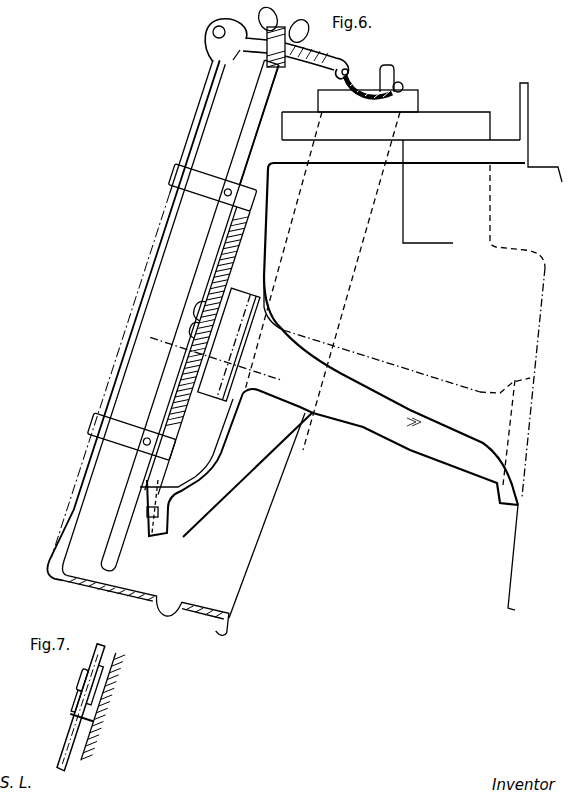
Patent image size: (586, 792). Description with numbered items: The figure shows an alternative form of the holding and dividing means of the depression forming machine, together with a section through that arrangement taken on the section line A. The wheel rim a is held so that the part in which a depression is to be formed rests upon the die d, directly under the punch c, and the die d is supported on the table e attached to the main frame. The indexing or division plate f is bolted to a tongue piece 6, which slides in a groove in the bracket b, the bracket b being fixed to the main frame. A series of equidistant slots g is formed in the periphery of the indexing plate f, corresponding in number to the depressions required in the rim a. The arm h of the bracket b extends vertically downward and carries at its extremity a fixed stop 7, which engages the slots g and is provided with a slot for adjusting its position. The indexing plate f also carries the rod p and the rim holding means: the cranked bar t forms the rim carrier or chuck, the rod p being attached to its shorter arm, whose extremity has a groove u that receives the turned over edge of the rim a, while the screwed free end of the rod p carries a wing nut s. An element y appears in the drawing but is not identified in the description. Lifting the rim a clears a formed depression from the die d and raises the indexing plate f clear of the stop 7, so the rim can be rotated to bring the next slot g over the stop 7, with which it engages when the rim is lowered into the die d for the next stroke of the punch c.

In FIG. 6, the wing nut s is at (300, 24).
In FIG. 6, the yoke arm y is at (295, 57).
In FIG. 6, the punch c is at (388, 45).
In FIG. 6, the die d is at (414, 102).
In FIG. 6, the table e is at (477, 126).
In FIG. 6, the tongue piece 6 is at (235, 291).
In FIG. 7, the tongue piece 6 is at (100, 700).
In FIG. 6, the section line A is at (172, 344).
In FIG. 6, the indexing or division plate f is at (197, 357).
In FIG. 7, the indexing or division plate f is at (94, 723).
In FIG. 6, the bracket b is at (353, 431).
In FIG. 7, the bracket b is at (96, 748).
In FIG. 6, the slots g is at (146, 484).
In FIG. 6, the arm h is at (246, 462).
In FIG. 6, the fixed stop 7 is at (149, 511).
In FIG. 6, the wheel rim a is at (243, 546).
In FIG. 6, the cranked bar t is at (76, 580).
In FIG. 6, the rod p is at (106, 564).
In FIG. 6, the groove u is at (167, 619).